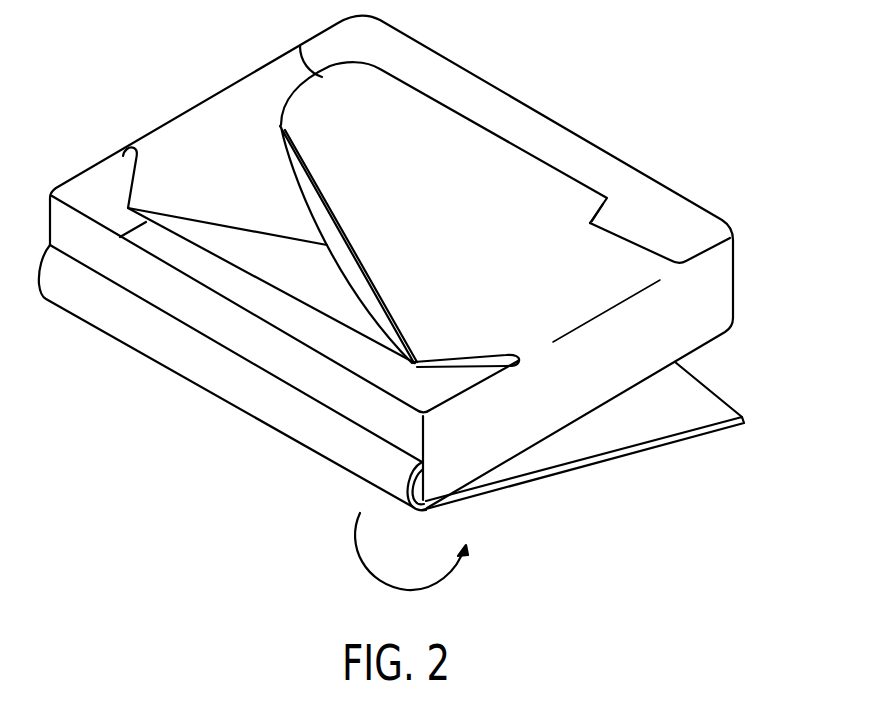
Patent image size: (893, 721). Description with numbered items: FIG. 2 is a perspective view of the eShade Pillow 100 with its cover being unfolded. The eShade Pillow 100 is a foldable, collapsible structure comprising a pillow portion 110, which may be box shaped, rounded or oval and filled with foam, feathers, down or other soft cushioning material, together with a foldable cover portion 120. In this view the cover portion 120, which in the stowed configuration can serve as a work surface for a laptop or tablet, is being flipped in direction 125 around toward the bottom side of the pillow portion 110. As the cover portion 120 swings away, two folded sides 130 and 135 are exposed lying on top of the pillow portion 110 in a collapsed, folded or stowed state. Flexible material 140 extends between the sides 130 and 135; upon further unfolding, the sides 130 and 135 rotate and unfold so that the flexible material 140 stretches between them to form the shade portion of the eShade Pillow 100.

The eShade Pillow 100 is at (416, 318).
The pillow portion 110 is at (690, 312).
The cover portion 120 is at (649, 431).
The direction 125 is at (385, 588).
The side 130 is at (530, 208).
The side 135 is at (217, 160).
The flexible material 140 is at (298, 275).